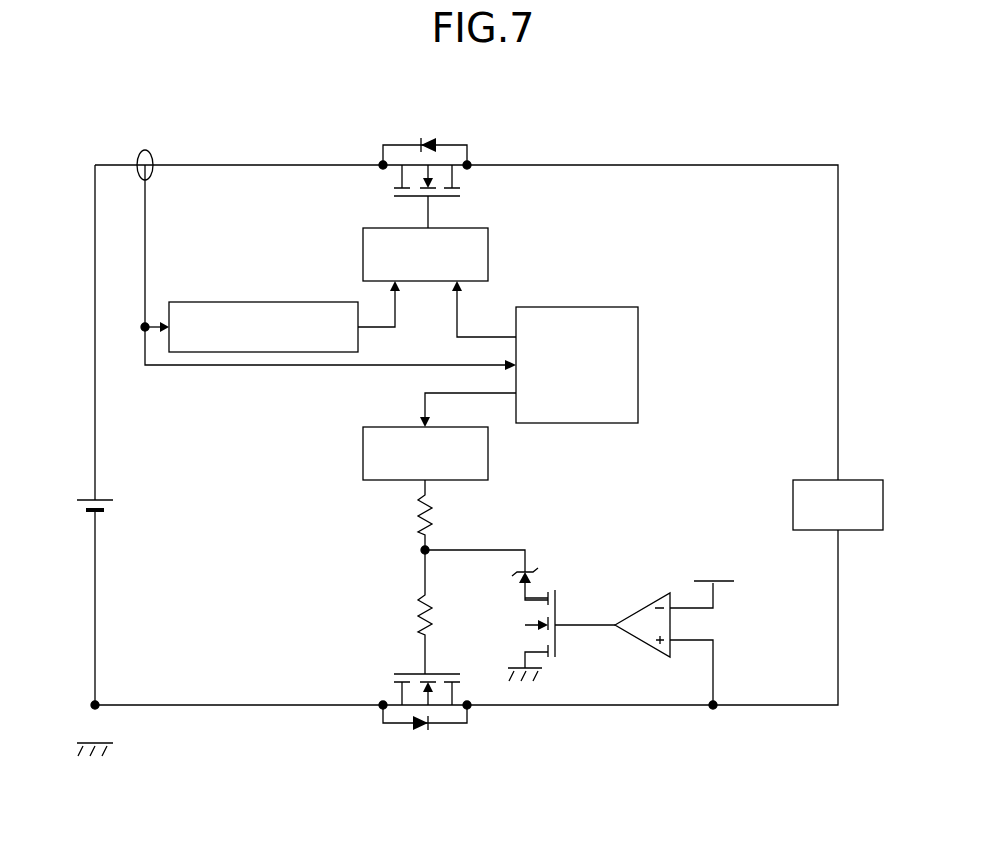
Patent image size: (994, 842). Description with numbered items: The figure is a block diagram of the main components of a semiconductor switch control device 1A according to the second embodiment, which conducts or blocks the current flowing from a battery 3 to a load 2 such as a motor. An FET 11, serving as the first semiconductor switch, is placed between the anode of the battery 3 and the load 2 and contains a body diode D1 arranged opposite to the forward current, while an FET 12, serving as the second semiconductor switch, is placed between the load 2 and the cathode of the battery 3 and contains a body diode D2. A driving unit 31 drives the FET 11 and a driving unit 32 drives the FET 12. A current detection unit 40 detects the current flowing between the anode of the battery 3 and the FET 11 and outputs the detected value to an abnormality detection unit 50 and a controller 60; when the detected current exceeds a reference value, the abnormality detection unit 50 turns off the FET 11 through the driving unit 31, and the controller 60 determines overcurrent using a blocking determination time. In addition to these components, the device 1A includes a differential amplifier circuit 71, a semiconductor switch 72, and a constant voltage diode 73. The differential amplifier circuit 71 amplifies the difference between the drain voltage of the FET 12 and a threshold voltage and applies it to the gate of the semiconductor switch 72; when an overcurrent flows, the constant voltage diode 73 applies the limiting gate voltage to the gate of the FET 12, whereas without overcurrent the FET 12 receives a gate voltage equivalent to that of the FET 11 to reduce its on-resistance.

The semiconductor switch control device 1A is at (612, 108).
The current detection unit 40 is at (147, 150).
The FET 11 is at (462, 132).
The body diode D1 is at (430, 140).
The driving unit 31 is at (488, 242).
The abnormality detection unit 50 is at (312, 302).
The controller 60 is at (623, 300).
The driving unit 32 is at (488, 460).
The constant voltage diode 73 is at (540, 567).
The semiconductor switch 72 is at (568, 603).
The differential amplifier circuit 71 is at (637, 641).
The FET 12 is at (468, 740).
The body diode D2 is at (422, 730).
The battery 3 is at (116, 481).
The load 2 is at (858, 480).